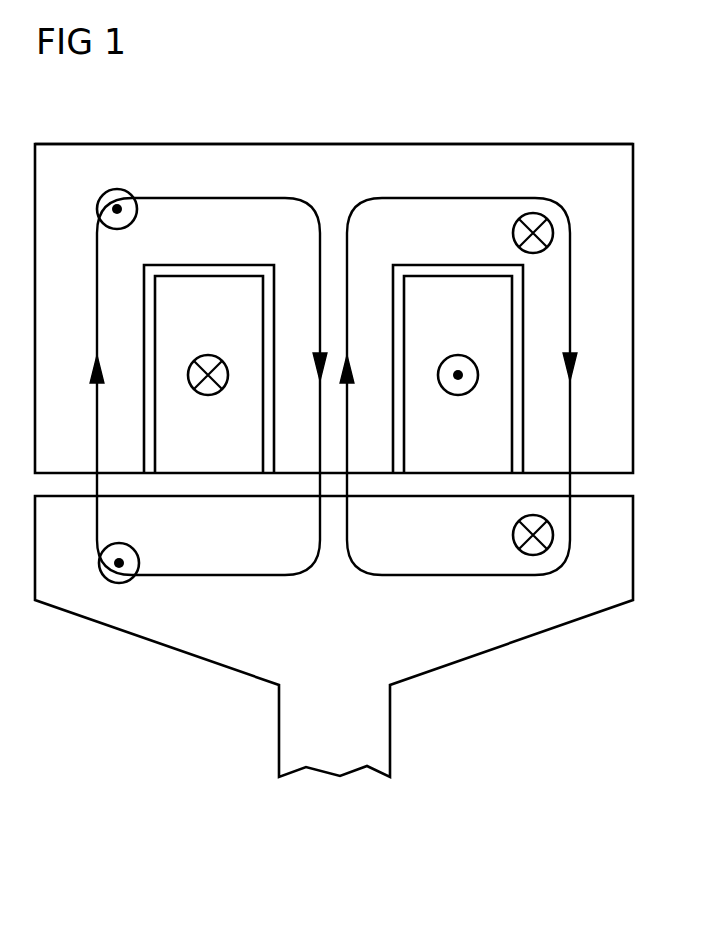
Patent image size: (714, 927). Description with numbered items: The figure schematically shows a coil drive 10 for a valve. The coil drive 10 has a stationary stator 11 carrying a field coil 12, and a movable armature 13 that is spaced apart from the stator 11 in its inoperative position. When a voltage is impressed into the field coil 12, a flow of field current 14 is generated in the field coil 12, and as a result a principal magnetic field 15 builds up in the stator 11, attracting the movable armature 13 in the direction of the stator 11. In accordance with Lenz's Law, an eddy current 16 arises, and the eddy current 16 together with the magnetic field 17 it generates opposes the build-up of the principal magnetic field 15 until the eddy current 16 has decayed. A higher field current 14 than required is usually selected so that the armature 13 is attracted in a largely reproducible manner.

The coil drive 10 is at (565, 105).
The stator 11 is at (333, 150).
The field coil 12 is at (430, 284).
The armature 13 is at (157, 632).
The field current 14 is at (211, 355).
The principal magnetic field 15 is at (208, 578).
The eddy current 16 is at (137, 216).
The magnetic field generated by the eddy current 17 is at (460, 578).